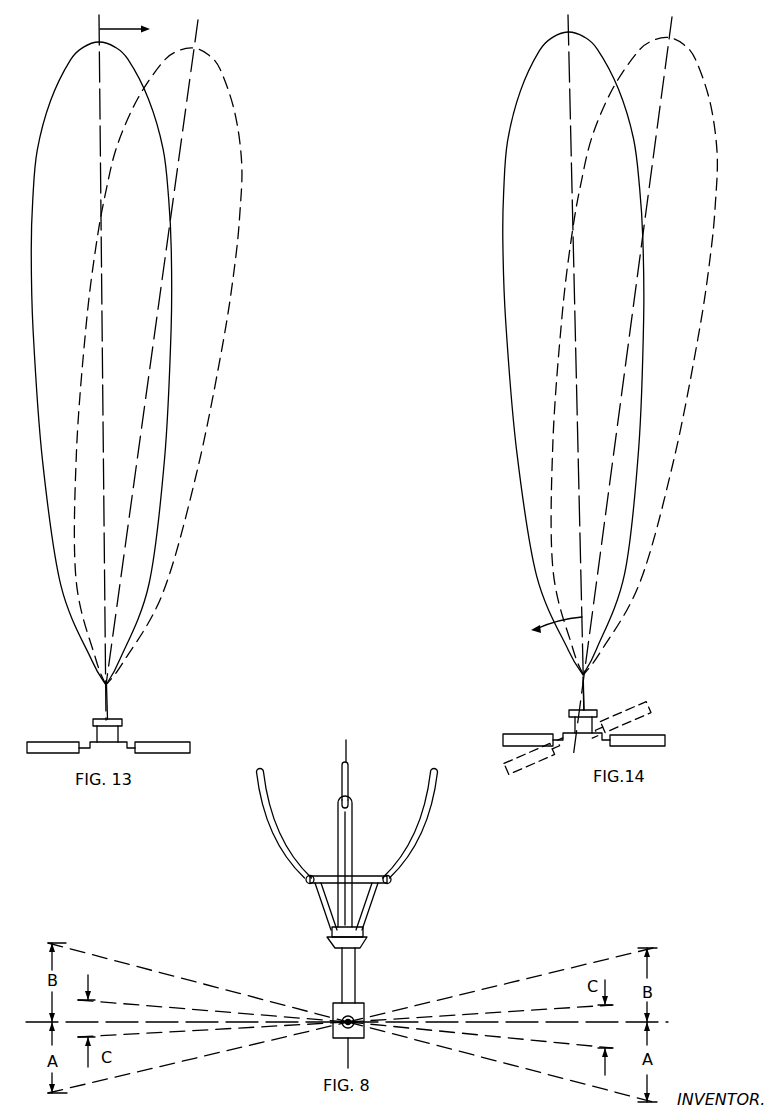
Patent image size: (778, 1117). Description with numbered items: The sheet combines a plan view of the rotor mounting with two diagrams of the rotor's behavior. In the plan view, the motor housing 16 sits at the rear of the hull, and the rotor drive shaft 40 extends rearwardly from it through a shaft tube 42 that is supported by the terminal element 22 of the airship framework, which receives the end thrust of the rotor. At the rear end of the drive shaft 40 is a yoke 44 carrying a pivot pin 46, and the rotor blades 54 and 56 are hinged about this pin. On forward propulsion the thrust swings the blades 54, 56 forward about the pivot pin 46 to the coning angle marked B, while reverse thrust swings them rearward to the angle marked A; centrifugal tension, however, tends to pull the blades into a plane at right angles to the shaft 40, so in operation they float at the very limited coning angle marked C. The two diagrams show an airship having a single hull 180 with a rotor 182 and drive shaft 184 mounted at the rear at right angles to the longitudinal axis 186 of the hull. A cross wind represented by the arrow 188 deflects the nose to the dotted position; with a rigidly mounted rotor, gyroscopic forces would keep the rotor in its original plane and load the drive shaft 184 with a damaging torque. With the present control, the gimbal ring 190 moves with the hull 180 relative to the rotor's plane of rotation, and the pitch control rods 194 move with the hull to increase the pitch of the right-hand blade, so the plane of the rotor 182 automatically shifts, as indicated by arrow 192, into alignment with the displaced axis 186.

In FIG. 8, the motor housing 16 is at (415, 835).
In FIG. 8, the terminal element 22 is at (363, 945).
In FIG. 8, the rotor drive shaft 40 is at (342, 956).
In FIG. 8, the shaft tube 42 is at (350, 779).
In FIG. 8, the yoke 44 is at (356, 1008).
In FIG. 8, the pivot pin 46 is at (343, 1027).
In FIG. 8, the rotor blade 54 is at (515, 1025).
In FIG. 8, the rotor blade 56 is at (203, 1023).
In FIG. 13, the hull 180 is at (158, 410).
In FIG. 14, the hull 180 is at (515, 211).
In FIG. 13, the rotor 182 is at (165, 745).
In FIG. 14, the rotor 182 is at (520, 739).
In FIG. 13, the drive shaft 184 is at (108, 712).
In FIG. 13, the longitudinal axis 186 is at (102, 298).
In FIG. 14, the longitudinal axis 186 is at (568, 82).
In FIG. 13, the arrow 188 is at (118, 31).
In FIG. 14, the gimbal ring 190 is at (597, 712).
In FIG. 14, the rotation arrow 192 is at (550, 635).
In FIG. 14, the pitch control rods 194 is at (598, 725).